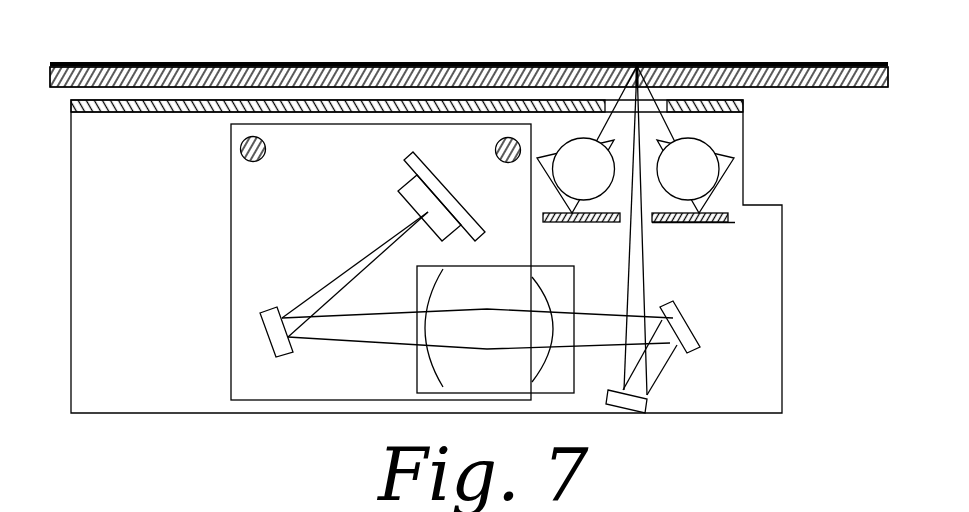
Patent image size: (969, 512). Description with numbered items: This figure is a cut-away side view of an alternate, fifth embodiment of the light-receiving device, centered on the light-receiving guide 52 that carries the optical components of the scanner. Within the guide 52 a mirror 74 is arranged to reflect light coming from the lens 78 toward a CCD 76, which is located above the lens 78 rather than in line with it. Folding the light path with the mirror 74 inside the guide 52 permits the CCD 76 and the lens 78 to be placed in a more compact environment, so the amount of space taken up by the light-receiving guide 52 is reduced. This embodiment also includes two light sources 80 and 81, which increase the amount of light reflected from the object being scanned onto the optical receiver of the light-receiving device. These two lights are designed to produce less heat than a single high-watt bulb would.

The light-receiving guide 52 is at (280, 400).
The mirror 74 is at (270, 337).
The CCD 76 is at (453, 194).
The lens 78 is at (553, 266).
The light source 80 is at (582, 137).
The light source 81 is at (683, 137).